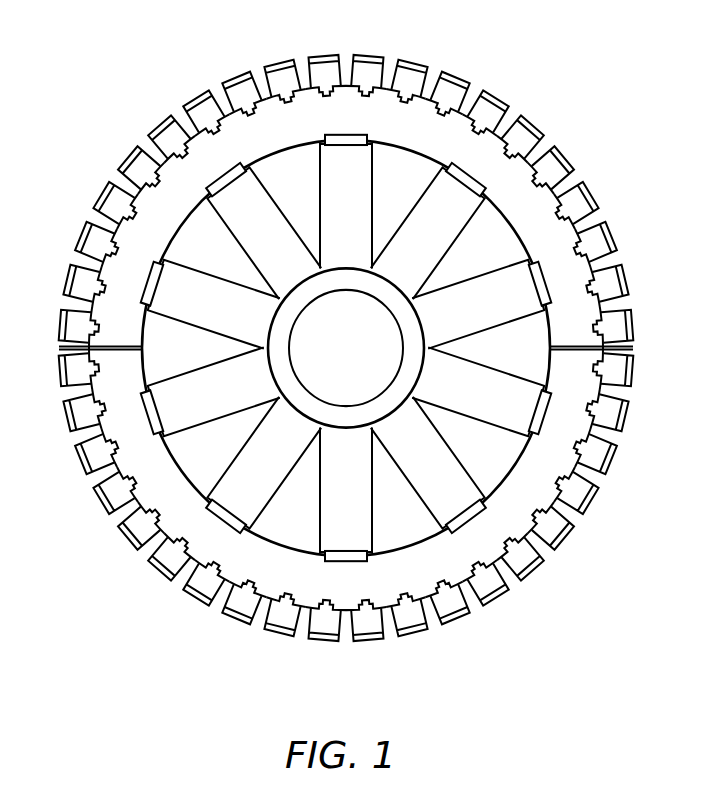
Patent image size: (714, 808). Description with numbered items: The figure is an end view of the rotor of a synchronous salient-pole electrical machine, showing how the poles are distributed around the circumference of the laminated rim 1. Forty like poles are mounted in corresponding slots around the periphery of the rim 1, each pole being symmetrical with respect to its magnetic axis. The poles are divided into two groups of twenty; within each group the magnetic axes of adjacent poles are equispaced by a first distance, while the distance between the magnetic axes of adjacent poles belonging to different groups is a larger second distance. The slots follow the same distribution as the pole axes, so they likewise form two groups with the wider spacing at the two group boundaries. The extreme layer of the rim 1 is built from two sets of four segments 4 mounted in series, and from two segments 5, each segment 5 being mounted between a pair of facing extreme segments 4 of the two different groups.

The rim 1 is at (350, 349).
The segments 4 is at (346, 348).
The segments 5 is at (346, 348).